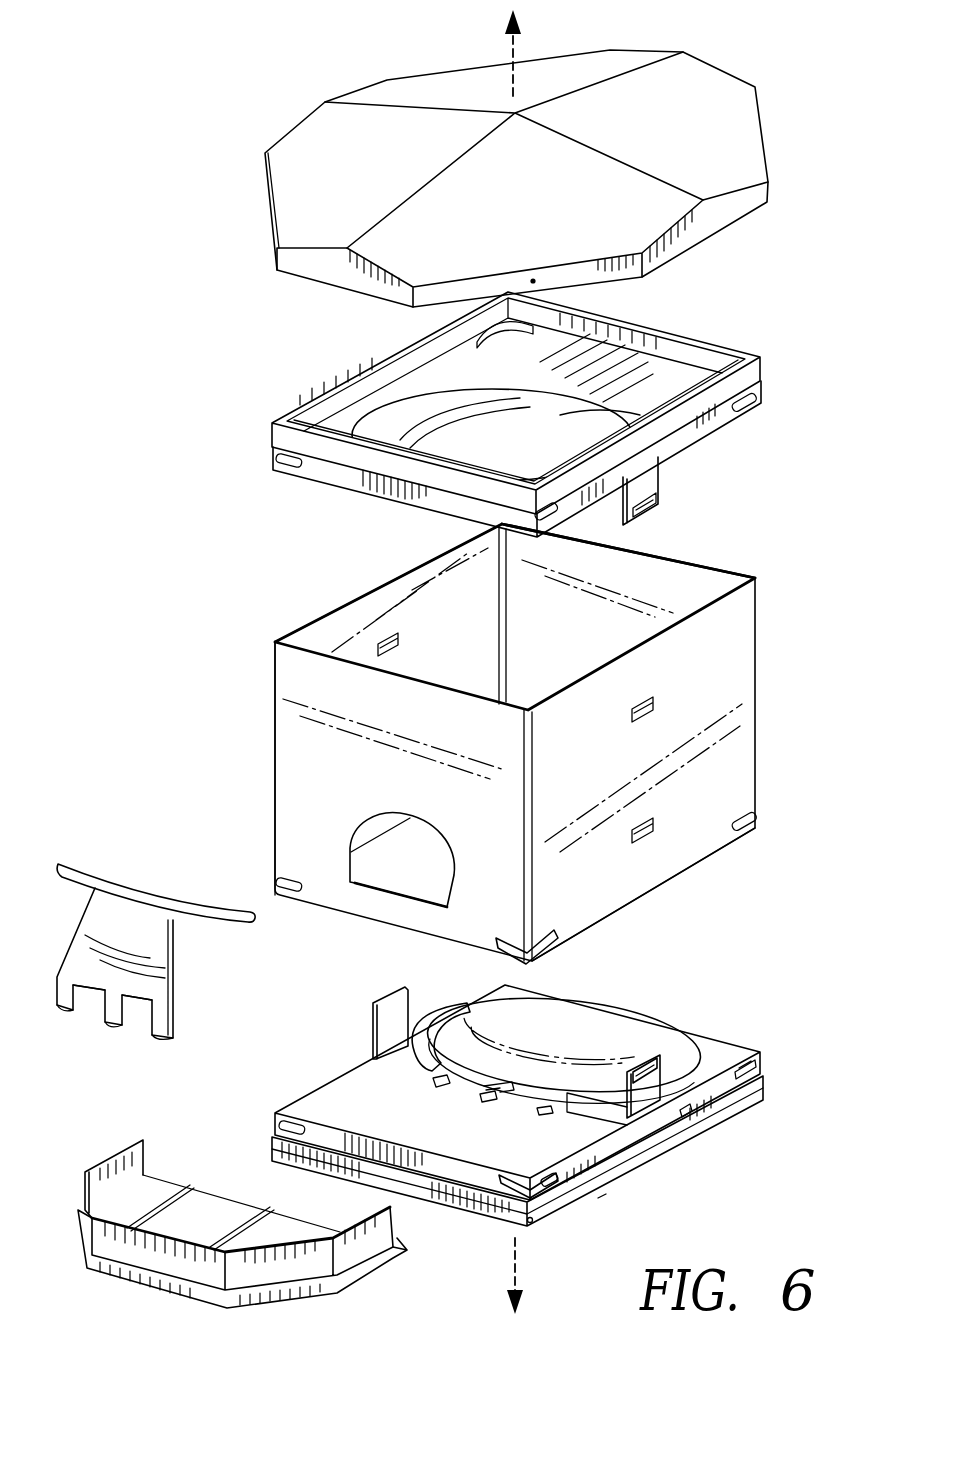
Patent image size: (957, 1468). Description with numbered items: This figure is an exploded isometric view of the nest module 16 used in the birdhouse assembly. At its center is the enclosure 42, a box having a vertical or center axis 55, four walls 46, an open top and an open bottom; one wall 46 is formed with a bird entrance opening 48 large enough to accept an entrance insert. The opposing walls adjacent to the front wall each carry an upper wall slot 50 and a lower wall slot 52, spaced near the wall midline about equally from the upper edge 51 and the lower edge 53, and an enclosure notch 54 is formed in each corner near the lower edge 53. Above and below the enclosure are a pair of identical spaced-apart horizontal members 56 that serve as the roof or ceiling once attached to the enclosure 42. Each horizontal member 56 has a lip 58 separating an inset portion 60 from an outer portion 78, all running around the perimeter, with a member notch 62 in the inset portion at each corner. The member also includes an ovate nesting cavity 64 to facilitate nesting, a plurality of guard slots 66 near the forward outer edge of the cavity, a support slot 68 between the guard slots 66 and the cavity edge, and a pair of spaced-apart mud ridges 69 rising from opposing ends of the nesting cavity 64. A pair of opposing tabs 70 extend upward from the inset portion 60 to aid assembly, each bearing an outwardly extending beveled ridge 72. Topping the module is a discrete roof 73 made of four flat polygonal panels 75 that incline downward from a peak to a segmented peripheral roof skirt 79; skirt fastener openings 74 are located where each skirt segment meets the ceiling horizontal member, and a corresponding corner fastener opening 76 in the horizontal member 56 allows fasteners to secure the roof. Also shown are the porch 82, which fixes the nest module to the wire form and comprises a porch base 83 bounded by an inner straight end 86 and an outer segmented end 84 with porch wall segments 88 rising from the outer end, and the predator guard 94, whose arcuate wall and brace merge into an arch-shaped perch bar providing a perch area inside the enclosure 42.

The nest module 16 is at (205, 354).
The enclosure 42 is at (272, 680).
The wall 46 is at (298, 763).
The bird entrance opening 48 is at (383, 822).
The upper wall slot 50 is at (402, 636).
The upper edge 51 is at (717, 552).
The lower wall slot 52 is at (636, 843).
The lower edge 53 is at (720, 868).
The enclosure notch 54 is at (757, 826).
The vertical or center axis 55 is at (509, 47).
The horizontal member 56 is at (272, 431).
The lip 58 is at (683, 1114).
The inset portion 60 is at (735, 1088).
The member notch 62 is at (740, 1068).
The ovate nesting cavity 64 is at (592, 1040).
The guard slots 66 is at (440, 1088).
The support slot 68 is at (497, 1098).
The mud ridges 69 is at (440, 1017).
The tab 70 is at (652, 476).
The beveled ridge 72 is at (653, 503).
The roof 73 is at (283, 138).
The skirt fastener openings 74 is at (534, 281).
The flat polygonal panels 75 is at (578, 61).
The corner fastener opening 76 is at (540, 492).
The outer portion 78 is at (760, 370).
The segmented peripheral roof skirt 79 is at (662, 249).
The porch 82 is at (172, 1180).
The porch base 83 is at (153, 1178).
The outer segmented end 84 is at (100, 1265).
The inner straight end 86 is at (243, 1195).
The porch wall segments 88 is at (100, 1170).
The predator guard 94 is at (70, 866).